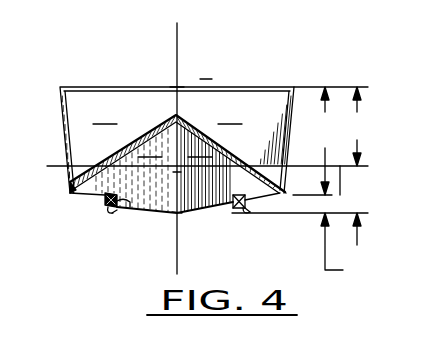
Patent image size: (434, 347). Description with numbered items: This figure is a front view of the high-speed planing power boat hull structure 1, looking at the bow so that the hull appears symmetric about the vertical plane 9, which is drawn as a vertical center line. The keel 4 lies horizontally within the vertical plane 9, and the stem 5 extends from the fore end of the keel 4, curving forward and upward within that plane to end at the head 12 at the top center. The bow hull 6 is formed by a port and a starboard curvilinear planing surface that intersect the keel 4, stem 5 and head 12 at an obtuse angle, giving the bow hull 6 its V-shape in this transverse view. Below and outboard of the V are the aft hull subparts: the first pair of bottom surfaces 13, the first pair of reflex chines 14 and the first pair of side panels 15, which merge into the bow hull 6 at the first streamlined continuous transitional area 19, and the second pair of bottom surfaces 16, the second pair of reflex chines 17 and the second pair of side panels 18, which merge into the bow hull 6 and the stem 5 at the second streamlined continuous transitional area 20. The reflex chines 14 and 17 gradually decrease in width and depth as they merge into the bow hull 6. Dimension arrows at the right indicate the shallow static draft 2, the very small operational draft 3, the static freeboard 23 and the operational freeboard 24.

The boat hull structure 1 is at (208, 64).
The static draft 2 is at (351, 182).
The operational draft 3 is at (341, 246).
The keel 4 is at (174, 211).
The stem 5 is at (173, 175).
The bow hull 6 is at (167, 131).
The vertical plane 9 is at (177, 33).
The head 12 is at (175, 86).
The first pair of bottom surfaces 13 is at (177, 216).
The first pair of reflex chines 14 is at (117, 211).
The first pair of side panels 15 is at (106, 209).
The second pair of bottom surfaces 16 is at (97, 196).
The second pair of reflex chines 17 is at (74, 198).
The second pair of side panels 18 is at (296, 102).
The first streamlined continuous transitional area 19 is at (124, 208).
The second streamlined continuous transitional area 20 is at (151, 130).
The static freeboard 23 is at (357, 126).
The operational freeboard 24 is at (323, 141).